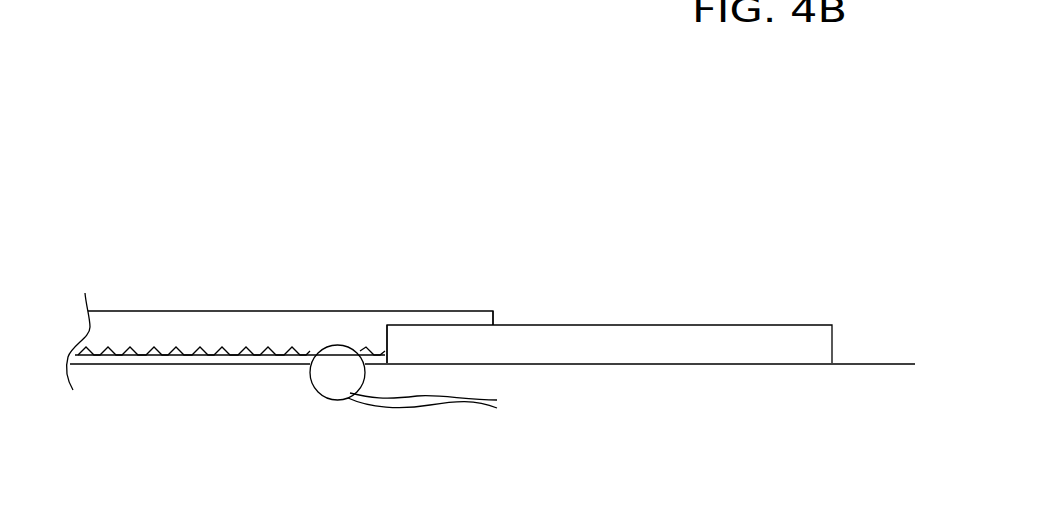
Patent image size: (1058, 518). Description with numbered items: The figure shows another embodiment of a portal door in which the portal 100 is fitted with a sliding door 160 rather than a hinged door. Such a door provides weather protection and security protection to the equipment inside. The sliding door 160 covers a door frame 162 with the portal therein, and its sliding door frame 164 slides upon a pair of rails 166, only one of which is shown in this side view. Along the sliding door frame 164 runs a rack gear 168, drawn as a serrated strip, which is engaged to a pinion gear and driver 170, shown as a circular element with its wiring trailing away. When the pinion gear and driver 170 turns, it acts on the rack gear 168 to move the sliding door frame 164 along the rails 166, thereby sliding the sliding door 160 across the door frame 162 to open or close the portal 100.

The portal 100 is at (257, 163).
The sliding door 160 is at (377, 257).
The door frame 162 is at (623, 325).
The sliding door frame 164 is at (170, 311).
The rail 166 is at (228, 364).
The rack gear 168 is at (290, 355).
The pinion gear and driver 170 is at (330, 383).